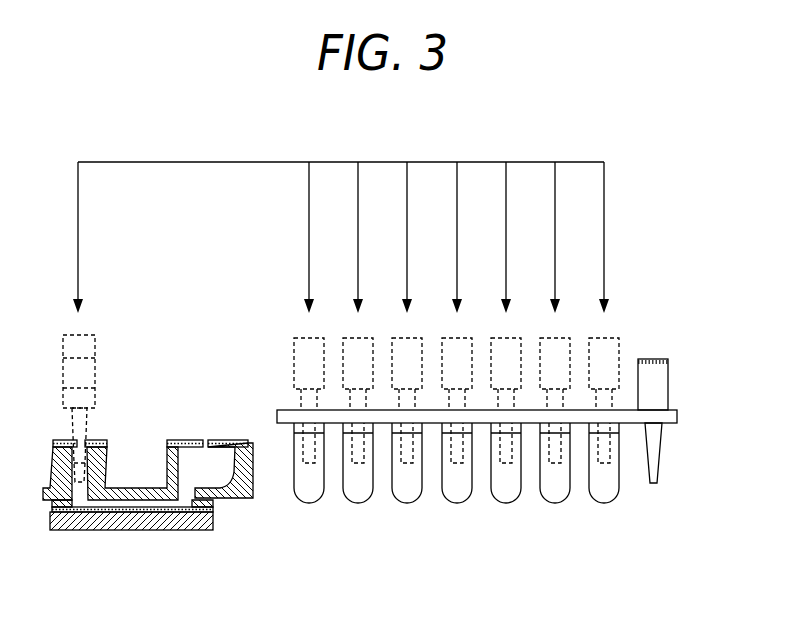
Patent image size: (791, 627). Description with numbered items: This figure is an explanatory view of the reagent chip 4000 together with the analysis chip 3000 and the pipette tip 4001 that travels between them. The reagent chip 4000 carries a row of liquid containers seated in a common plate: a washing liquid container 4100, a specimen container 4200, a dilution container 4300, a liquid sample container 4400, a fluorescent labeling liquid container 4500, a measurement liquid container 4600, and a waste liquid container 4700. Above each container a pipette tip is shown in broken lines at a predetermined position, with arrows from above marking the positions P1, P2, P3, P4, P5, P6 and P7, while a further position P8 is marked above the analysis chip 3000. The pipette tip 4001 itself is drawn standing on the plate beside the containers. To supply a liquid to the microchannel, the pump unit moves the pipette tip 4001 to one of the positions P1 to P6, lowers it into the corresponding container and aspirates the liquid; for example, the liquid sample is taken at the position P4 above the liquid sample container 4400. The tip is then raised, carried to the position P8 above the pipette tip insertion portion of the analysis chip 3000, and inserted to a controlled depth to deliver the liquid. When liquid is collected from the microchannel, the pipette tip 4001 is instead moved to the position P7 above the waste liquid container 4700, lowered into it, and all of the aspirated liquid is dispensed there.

The analysis chip 3000 is at (152, 415).
The reagent chip 4000 is at (675, 283).
The pipette tip 4001 is at (653, 450).
The washing liquid container 4100 is at (606, 497).
The specimen container 4200 is at (557, 497).
The dilution container 4300 is at (508, 497).
The liquid sample container 4400 is at (458, 497).
The fluorescent labeling liquid container 4500 is at (409, 497).
The measurement liquid container 4600 is at (360, 497).
The waste liquid container 4700 is at (312, 497).
The position P1 is at (609, 344).
The position P2 is at (560, 344).
The position P3 is at (511, 344).
The position P4 is at (462, 344).
The position P5 is at (412, 344).
The position P6 is at (363, 344).
The position P7 is at (314, 344).
The position P8 is at (84, 344).